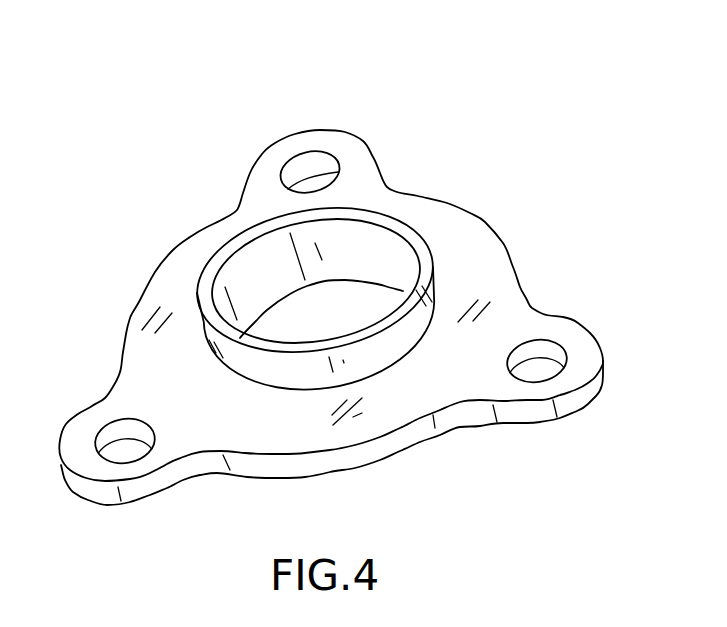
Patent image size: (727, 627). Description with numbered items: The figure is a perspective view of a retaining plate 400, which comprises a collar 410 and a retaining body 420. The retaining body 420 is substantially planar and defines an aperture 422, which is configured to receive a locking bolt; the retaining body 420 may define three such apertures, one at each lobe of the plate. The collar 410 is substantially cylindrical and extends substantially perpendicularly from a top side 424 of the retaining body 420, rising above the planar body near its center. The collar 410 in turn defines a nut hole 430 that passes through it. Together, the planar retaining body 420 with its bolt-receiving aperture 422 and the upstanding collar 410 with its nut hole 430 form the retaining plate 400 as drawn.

The retaining plate 400 is at (354, 271).
The collar 410 is at (410, 236).
The retaining body 420 is at (502, 245).
The aperture 422 is at (567, 354).
The top side 424 is at (512, 314).
The nut hole 430 is at (290, 305).